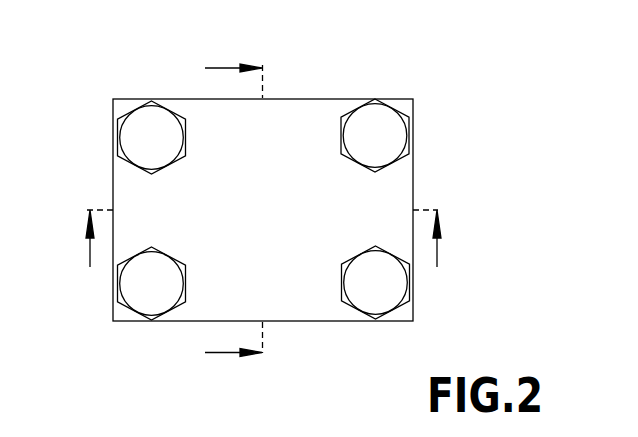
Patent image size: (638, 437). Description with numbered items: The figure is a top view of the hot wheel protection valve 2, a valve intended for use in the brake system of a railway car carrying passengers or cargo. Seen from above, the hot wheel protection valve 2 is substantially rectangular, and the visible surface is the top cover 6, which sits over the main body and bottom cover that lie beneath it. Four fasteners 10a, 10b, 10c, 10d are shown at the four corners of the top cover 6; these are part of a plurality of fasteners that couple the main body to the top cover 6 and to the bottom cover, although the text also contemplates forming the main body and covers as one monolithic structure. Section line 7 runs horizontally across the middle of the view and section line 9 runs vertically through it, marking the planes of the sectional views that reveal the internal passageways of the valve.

The hot wheel protection valve 2 is at (276, 185).
The top cover 6 is at (310, 108).
The fastener 10a is at (148, 110).
The fastener 10b is at (380, 112).
The fastener 10c is at (388, 277).
The fastener 10d is at (130, 292).
The section line 7- 7 is at (262, 240).
The section line 9- 9 is at (229, 213).